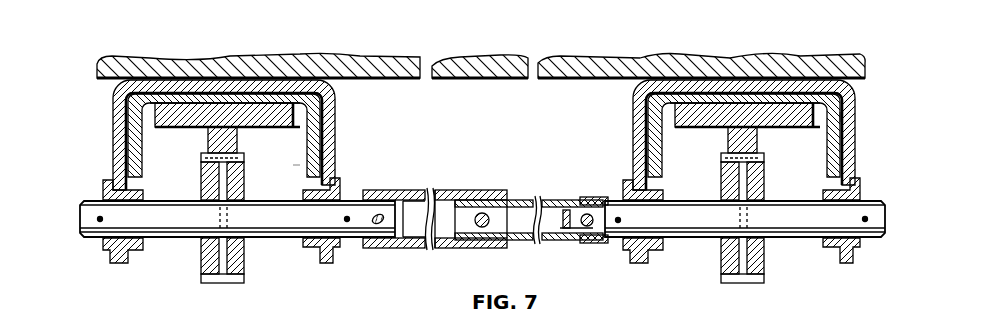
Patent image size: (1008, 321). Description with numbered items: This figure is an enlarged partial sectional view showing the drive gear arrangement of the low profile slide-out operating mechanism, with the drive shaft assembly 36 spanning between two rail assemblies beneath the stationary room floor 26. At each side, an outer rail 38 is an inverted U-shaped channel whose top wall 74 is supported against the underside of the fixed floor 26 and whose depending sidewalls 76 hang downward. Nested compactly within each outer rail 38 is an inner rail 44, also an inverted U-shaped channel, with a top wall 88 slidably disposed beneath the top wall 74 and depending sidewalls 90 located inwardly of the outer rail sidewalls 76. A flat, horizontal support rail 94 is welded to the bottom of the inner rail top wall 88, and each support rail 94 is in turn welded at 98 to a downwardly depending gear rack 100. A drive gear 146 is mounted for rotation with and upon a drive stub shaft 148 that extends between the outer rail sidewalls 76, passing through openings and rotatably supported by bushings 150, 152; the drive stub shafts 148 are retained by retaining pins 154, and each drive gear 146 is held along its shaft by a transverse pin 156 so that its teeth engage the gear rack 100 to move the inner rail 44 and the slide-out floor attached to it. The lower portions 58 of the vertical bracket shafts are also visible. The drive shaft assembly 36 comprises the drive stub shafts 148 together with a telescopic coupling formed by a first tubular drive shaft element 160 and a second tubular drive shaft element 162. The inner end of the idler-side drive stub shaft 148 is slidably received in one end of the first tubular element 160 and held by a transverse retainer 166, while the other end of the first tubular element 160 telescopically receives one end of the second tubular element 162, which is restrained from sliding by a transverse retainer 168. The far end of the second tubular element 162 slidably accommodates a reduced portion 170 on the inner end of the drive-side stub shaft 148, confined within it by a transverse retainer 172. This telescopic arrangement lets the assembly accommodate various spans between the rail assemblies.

The stationary room floor 26 is at (342, 70).
The drive shaft assembly 36 is at (476, 187).
The outer rail 38 is at (295, 71).
The inner rail 44 is at (206, 97).
The lower portions 58 is at (283, 179).
The top wall 74 is at (252, 77).
The sidewalls 76 is at (113, 102).
The top wall 88 is at (173, 99).
The sidewalls 90 is at (132, 140).
The support rail 94 is at (170, 122).
The weld 98 is at (337, 152).
The gear rack 100 is at (236, 142).
The drive gear 146 is at (207, 253).
The drive stub shaft 148 is at (285, 222).
The bushing 150 is at (105, 188).
The bushing 152 is at (341, 186).
The retaining pins 154 is at (100, 220).
The transverse pin 156 is at (226, 272).
The first tubular drive shaft element 160 is at (425, 190).
The second tubular drive shaft element 162 is at (523, 200).
The transverse retainer 166 is at (384, 224).
The transverse retainer 168 is at (477, 226).
The reduced portion 170 is at (566, 225).
The transverse retainer 172 is at (590, 242).